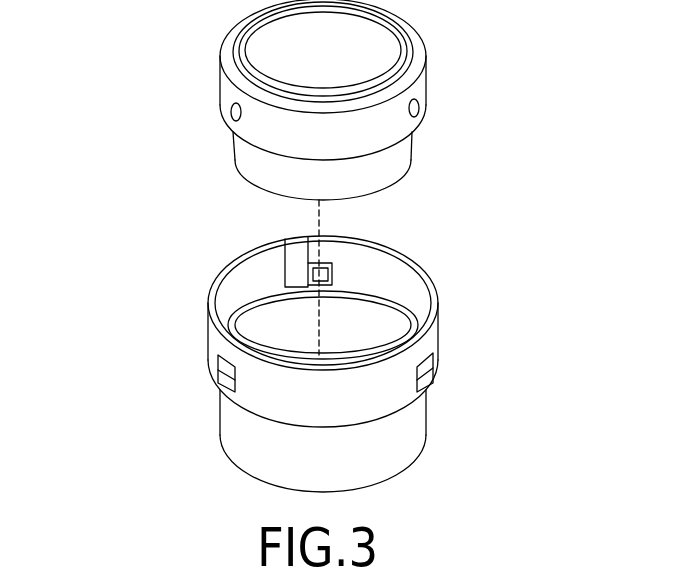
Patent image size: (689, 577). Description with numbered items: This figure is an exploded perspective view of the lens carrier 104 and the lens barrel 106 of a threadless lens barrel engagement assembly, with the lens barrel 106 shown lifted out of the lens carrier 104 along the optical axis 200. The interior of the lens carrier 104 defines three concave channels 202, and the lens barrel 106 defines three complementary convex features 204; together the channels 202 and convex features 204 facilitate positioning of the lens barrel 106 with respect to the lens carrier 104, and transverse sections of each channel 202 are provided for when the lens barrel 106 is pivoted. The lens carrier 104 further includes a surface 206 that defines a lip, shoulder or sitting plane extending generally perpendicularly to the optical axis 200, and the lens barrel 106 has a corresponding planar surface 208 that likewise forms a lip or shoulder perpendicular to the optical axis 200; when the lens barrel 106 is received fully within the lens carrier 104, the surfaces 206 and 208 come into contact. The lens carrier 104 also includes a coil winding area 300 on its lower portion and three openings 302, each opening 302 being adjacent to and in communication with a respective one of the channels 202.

The lens carrier 104 is at (298, 371).
The lens barrel 106 is at (280, 101).
The optical axis 200 is at (304, 215).
The concave channels 202 is at (295, 277).
The convex features 204 is at (229, 116).
The surface 206 is at (380, 308).
The planar surface 208 is at (415, 151).
The coil winding area 300 is at (399, 442).
The openings 302 is at (222, 370).